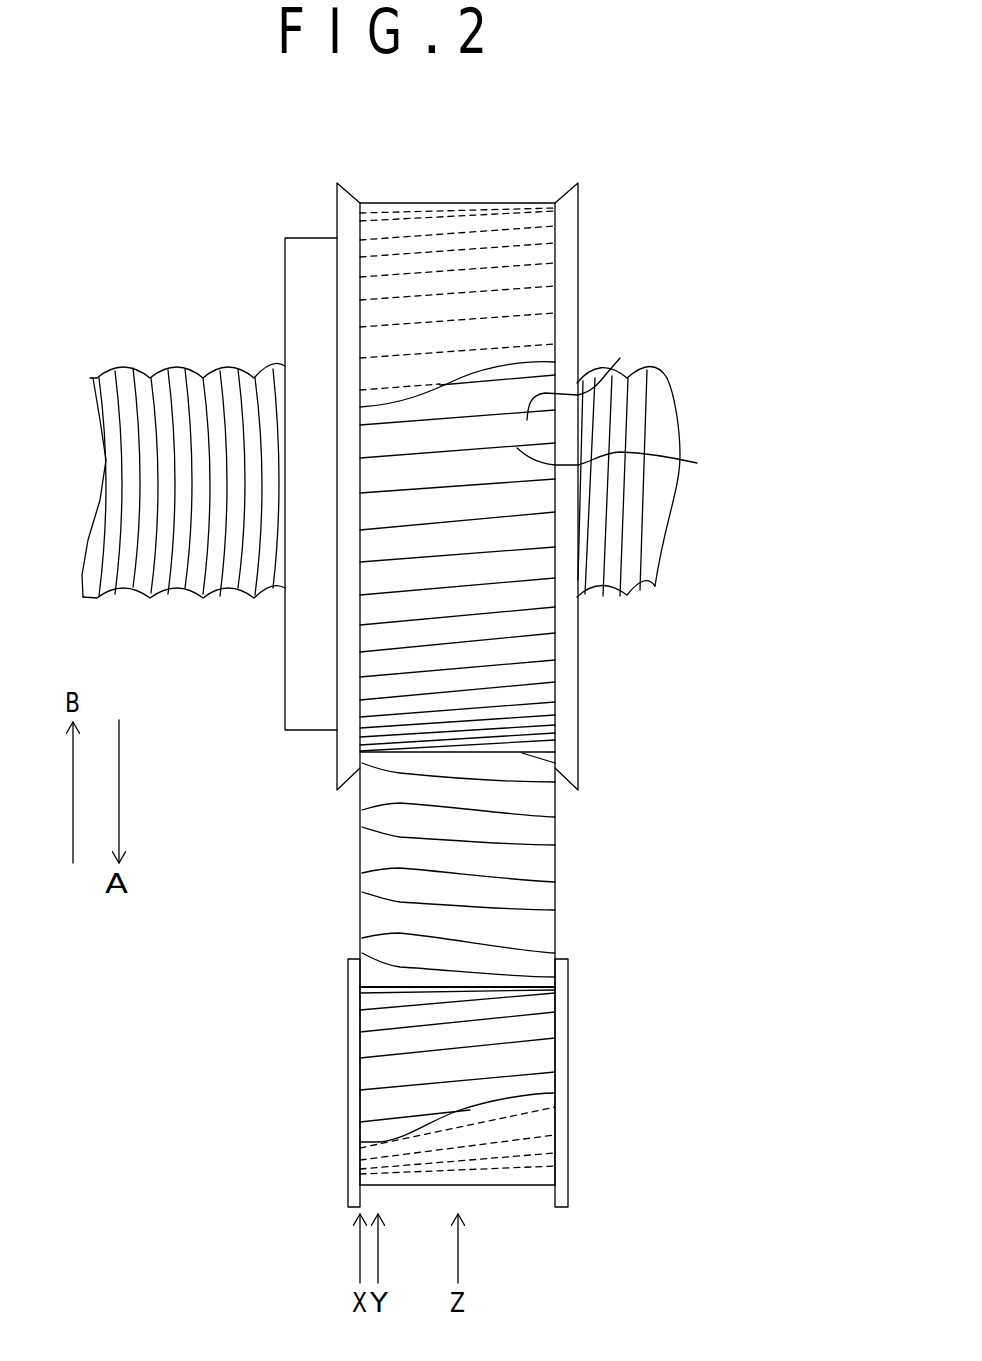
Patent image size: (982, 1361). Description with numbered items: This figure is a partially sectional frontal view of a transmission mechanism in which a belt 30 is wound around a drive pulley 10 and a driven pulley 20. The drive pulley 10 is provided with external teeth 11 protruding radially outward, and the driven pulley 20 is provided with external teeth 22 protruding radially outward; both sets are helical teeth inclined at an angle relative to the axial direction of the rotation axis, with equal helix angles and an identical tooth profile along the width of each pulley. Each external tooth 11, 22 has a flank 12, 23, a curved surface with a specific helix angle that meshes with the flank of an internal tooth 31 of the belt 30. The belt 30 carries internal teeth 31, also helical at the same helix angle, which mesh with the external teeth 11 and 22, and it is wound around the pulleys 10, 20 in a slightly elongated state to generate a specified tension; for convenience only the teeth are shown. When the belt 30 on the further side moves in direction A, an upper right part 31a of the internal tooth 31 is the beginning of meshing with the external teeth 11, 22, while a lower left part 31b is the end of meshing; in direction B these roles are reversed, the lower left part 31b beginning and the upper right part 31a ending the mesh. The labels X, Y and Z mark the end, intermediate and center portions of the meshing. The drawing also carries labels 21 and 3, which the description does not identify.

The driven pulley 20 is at (600, 257).
The winding 21 is at (446, 212).
The external teeth 22 is at (624, 356).
The flank 23 is at (625, 465).
The electric wire 3 is at (663, 523).
The belt 30 is at (482, 865).
The internal teeth 31 is at (508, 818).
The upper right part 31a is at (537, 883).
The lower left part 31b is at (380, 900).
The drive pulley 10 is at (491, 1083).
The external teeth 11 is at (388, 1066).
The flank 12 is at (385, 1096).